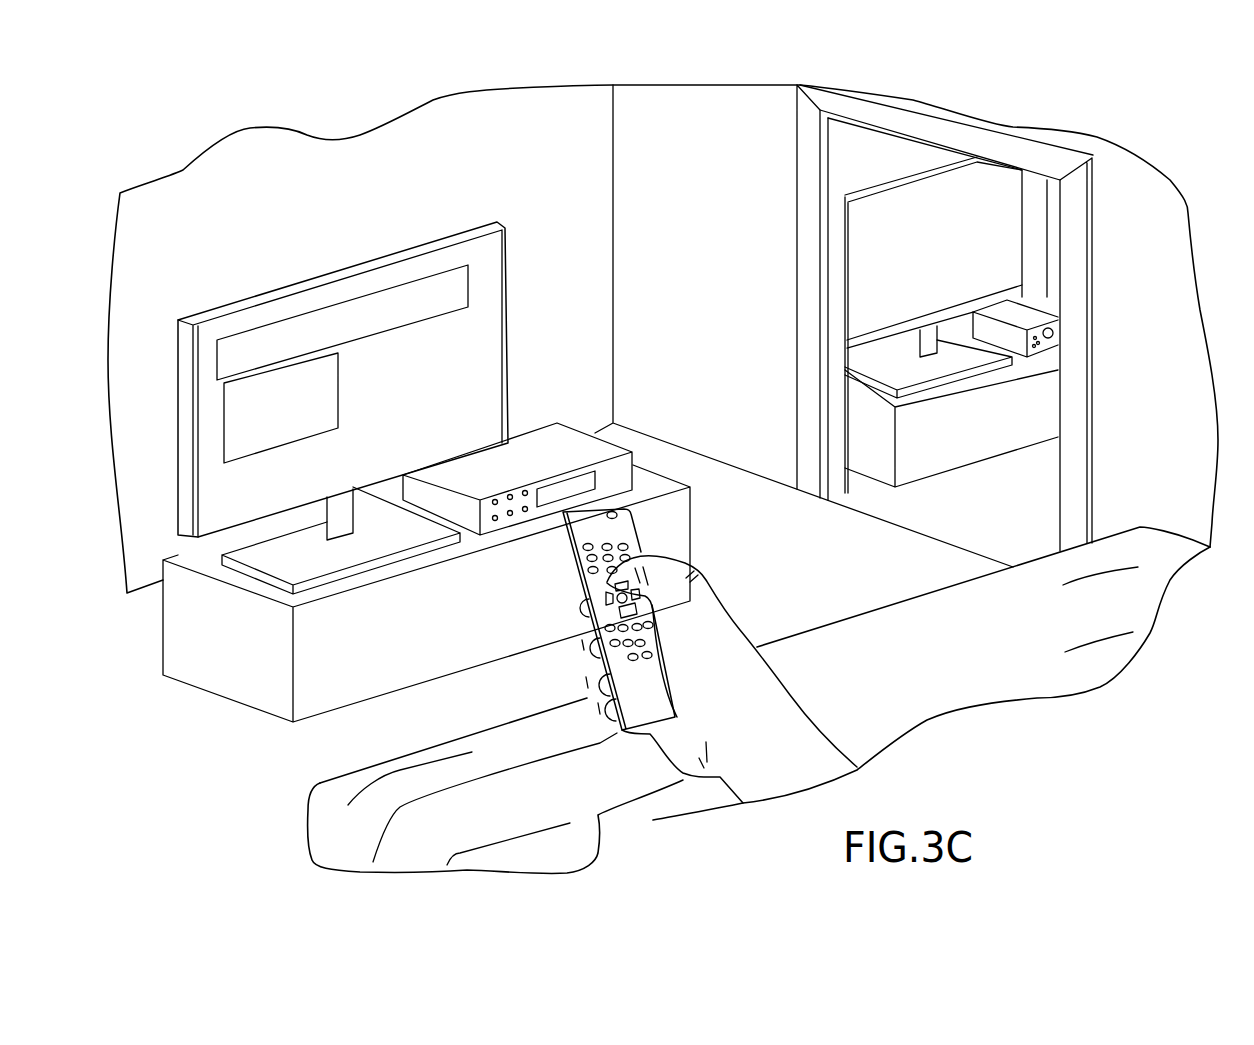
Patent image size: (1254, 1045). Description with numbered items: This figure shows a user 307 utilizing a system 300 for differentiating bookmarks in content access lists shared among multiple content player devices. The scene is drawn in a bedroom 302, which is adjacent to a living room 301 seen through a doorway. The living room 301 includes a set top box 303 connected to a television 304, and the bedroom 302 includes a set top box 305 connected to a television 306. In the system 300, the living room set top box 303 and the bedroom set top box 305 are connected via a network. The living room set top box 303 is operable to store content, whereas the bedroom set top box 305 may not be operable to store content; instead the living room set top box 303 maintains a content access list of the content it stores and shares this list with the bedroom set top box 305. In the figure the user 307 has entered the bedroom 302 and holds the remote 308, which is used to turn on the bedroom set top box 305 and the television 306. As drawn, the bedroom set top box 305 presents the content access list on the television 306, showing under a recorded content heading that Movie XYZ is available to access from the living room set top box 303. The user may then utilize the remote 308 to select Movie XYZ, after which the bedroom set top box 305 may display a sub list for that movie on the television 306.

The system 300 is at (1178, 157).
The living room 301 is at (1050, 453).
The bedroom 302 is at (213, 748).
The set top box 303 is at (1048, 308).
The television 304 is at (1033, 233).
The set top box 305 is at (562, 433).
The television 306 is at (510, 243).
The user 307 is at (723, 625).
The remote 308 is at (580, 565).